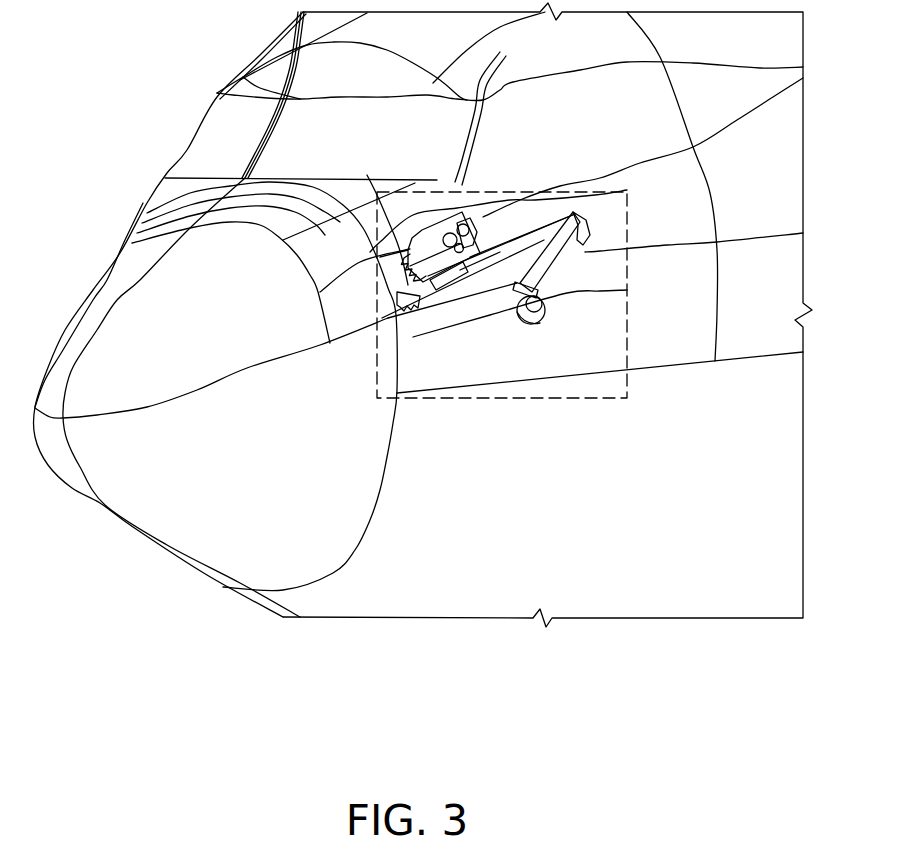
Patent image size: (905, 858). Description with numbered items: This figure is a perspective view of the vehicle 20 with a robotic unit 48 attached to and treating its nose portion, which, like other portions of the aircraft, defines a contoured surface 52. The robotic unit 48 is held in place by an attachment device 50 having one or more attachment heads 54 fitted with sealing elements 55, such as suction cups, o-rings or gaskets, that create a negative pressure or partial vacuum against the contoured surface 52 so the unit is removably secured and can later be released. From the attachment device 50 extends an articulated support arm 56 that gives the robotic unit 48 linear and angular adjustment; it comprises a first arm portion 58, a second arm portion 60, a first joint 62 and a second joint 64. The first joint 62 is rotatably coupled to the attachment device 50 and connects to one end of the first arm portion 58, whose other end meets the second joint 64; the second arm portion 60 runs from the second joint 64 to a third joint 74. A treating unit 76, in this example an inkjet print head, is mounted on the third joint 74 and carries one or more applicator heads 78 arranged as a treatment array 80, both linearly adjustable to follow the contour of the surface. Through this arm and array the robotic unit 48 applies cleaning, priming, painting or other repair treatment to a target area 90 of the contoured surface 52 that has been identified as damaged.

The vehicle 20 is at (218, 28).
The robotic unit 48 is at (480, 222).
The attachment device 50 is at (545, 292).
The contoured surface 52 is at (453, 291).
The attachment head 54 is at (560, 315).
The sealing element 55 is at (527, 295).
The articulated support arm 56 is at (488, 276).
The first arm portion 58 is at (553, 257).
The second arm portion 60 is at (530, 220).
The first joint 62 is at (533, 322).
The second joint 64 is at (588, 222).
The third joint 74 is at (452, 230).
The treating unit 76 is at (442, 232).
The applicator head 78 is at (440, 308).
The treatment array 80 is at (396, 273).
The target area 90 is at (490, 399).